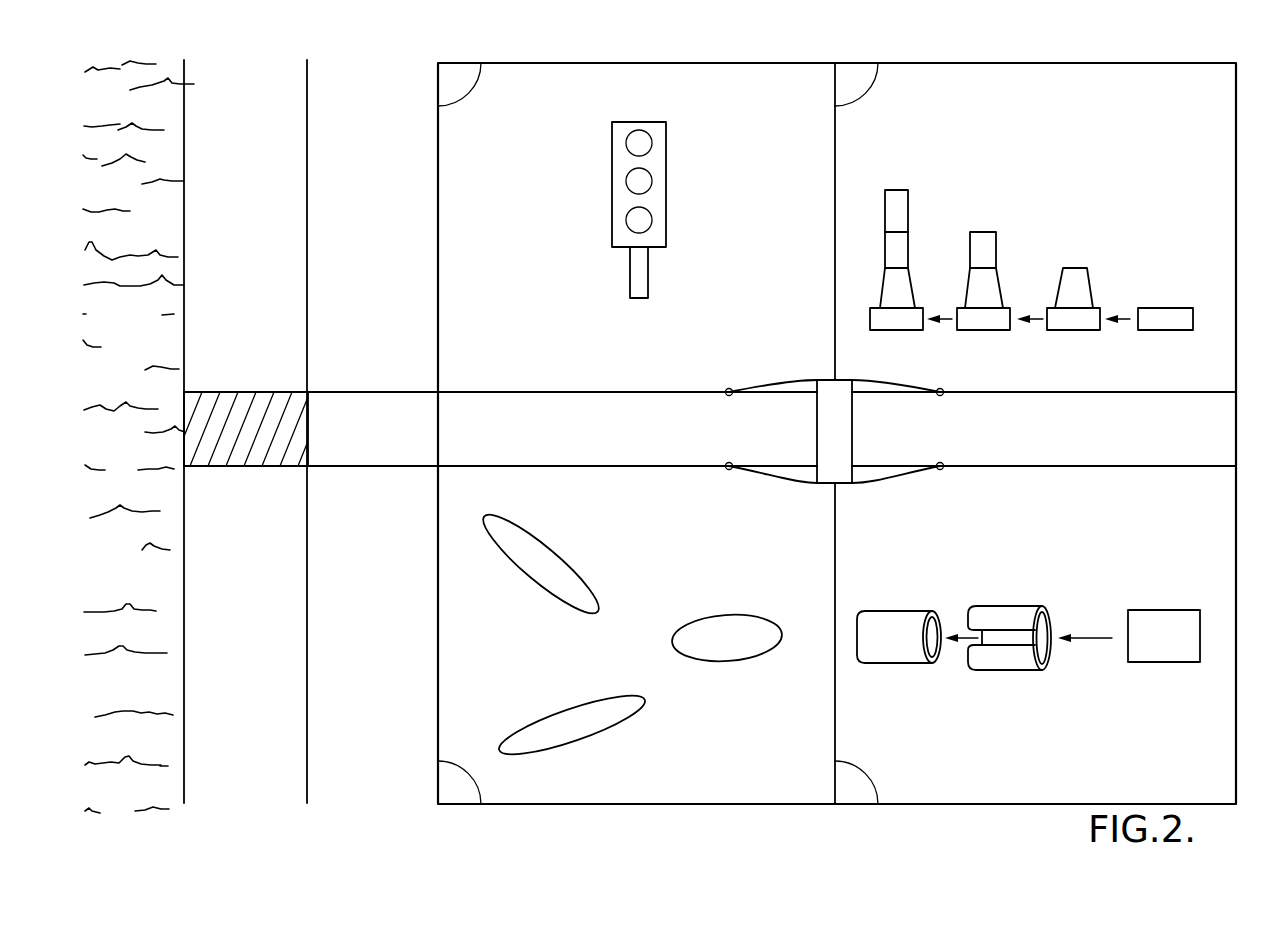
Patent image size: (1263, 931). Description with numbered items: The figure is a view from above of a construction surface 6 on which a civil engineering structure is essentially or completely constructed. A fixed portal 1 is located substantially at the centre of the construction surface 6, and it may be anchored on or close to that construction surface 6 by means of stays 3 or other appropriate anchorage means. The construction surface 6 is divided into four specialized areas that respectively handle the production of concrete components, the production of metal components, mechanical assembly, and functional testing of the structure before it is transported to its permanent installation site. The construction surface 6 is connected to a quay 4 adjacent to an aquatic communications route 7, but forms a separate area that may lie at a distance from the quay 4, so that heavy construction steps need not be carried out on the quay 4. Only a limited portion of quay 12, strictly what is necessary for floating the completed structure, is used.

The fixed portal 1 is at (870, 437).
The stays 3 is at (782, 383).
The quay 4 is at (251, 145).
The construction surface 6 is at (1200, 810).
The aquatic communications route 7 is at (152, 344).
The portion of quay 12 is at (270, 427).